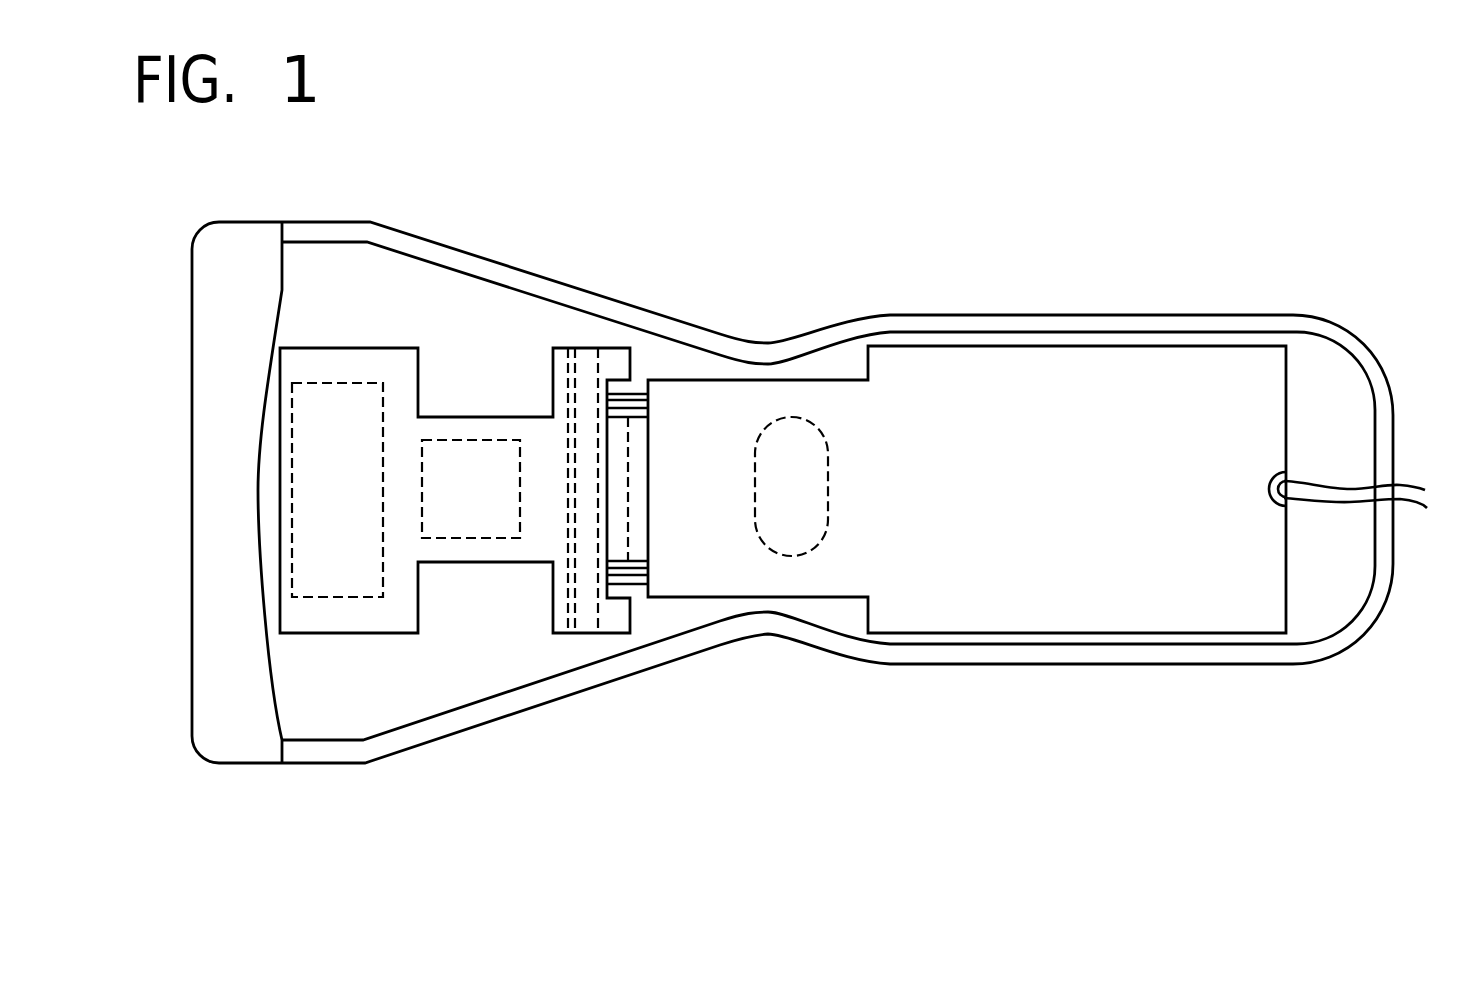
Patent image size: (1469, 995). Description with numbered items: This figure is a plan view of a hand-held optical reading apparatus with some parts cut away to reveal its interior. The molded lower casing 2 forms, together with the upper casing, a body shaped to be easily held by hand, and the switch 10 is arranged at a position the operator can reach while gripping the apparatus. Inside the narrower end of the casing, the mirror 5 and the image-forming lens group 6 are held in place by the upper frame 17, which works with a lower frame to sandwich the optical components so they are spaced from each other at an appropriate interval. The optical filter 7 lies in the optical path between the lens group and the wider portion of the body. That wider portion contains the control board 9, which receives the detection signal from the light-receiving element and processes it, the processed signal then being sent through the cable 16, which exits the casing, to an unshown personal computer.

The lower casing 2 is at (1085, 664).
The mirror 5 is at (313, 597).
The image-forming lens group 6 is at (478, 535).
The optical filter 7 is at (567, 630).
The control board 9 is at (1053, 372).
The switch 10 is at (795, 556).
The cable 16 is at (1420, 506).
The upper frame 17 is at (467, 432).